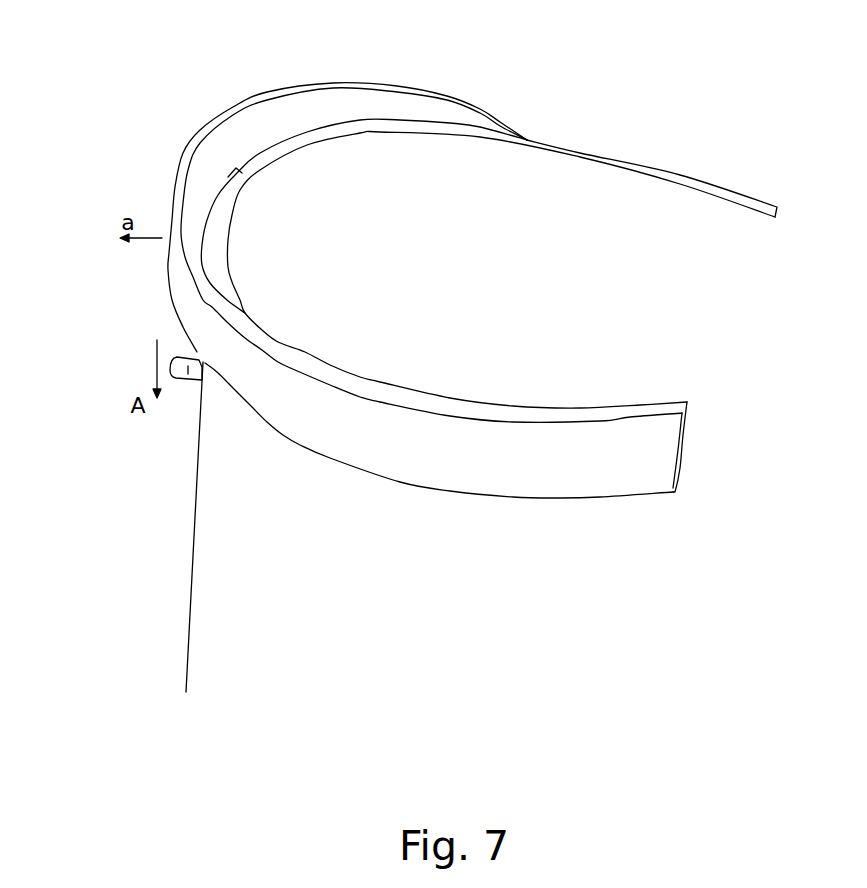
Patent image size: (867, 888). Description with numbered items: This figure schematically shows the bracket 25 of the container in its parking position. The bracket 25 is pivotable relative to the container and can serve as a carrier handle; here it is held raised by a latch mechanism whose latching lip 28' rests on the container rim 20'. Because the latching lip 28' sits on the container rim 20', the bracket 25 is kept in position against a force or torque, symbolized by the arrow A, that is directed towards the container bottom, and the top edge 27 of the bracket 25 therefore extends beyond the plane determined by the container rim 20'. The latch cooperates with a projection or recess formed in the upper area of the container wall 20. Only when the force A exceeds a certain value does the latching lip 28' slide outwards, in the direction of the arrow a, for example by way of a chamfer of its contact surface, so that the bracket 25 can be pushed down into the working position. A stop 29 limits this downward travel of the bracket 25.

The top edge 27 is at (242, 103).
The latching lip 28' is at (329, 197).
The container rim 20' is at (439, 269).
The bracket 25 is at (188, 290).
The stop 29 is at (190, 381).
The container wall 20 is at (156, 527).